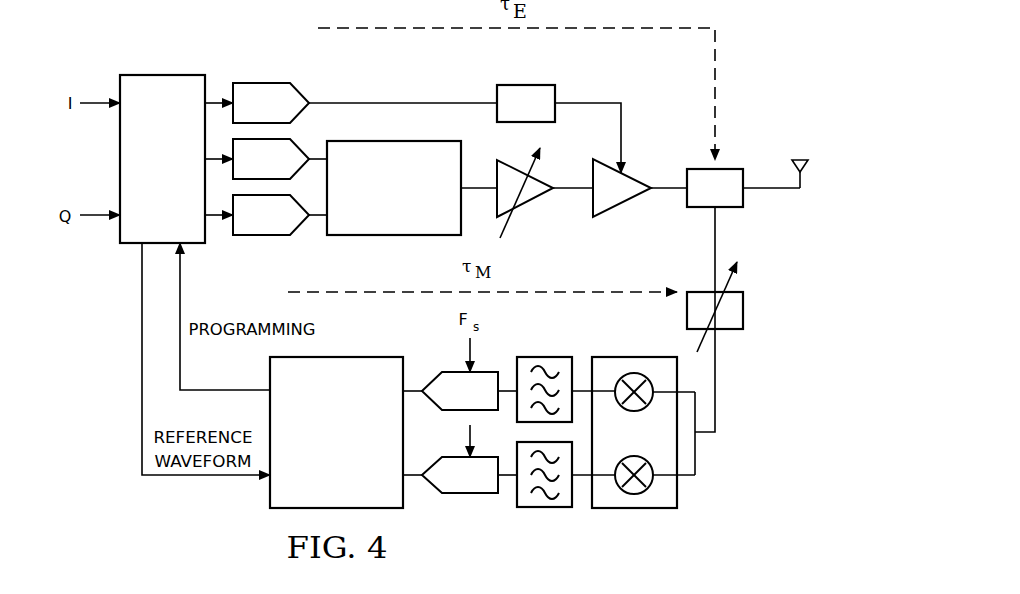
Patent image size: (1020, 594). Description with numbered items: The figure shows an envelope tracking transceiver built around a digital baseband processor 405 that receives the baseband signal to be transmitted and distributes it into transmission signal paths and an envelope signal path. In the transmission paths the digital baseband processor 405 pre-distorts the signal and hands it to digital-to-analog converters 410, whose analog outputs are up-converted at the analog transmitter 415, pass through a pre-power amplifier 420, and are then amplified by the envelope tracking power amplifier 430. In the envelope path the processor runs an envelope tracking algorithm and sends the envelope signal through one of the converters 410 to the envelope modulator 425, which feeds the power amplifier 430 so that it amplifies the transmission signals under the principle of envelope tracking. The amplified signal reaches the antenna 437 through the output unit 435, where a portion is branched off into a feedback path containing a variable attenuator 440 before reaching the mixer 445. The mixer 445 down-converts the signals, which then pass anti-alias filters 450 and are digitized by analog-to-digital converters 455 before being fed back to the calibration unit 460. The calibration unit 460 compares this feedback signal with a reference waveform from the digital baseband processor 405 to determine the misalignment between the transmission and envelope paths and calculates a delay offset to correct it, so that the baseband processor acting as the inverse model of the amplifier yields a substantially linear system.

The digital baseband processor 405 is at (160, 75).
The digital-to-analog converters 410 is at (260, 83).
The analog transmitter 415 is at (393, 235).
The pre-power amplifier 420 is at (527, 205).
The envelope modulator 425 is at (528, 85).
The envelope tracking power amplifier 430 is at (620, 205).
The output unit 435 is at (735, 169).
The antenna 437 is at (805, 160).
The variable attenuator 440 is at (743, 308).
The mixer 445 is at (633, 508).
The anti-alias filters 450 is at (545, 507).
The analog-to-digital converters 455 is at (460, 493).
The calibration unit 460 is at (318, 484).